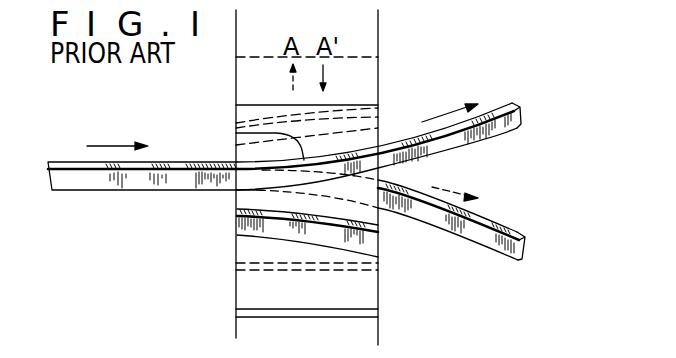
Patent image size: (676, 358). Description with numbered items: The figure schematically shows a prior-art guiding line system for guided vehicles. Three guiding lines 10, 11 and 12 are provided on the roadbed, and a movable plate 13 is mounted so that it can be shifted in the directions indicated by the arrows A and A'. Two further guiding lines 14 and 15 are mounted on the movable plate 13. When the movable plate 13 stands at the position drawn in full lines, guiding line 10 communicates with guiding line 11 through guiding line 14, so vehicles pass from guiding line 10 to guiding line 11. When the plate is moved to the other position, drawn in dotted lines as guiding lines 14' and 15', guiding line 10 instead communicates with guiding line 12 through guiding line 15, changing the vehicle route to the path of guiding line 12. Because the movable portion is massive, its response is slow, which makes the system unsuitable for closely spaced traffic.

The guiding line 10 is at (62, 164).
The guiding line 11 is at (472, 122).
The guiding line 12 is at (486, 215).
The movable plate 13 is at (372, 298).
The guiding line 14 is at (246, 135).
The guiding line (dotted-line position) 14' is at (334, 107).
The guiding line 15 is at (284, 241).
The guiding line (dotted-line position) 15' is at (335, 233).